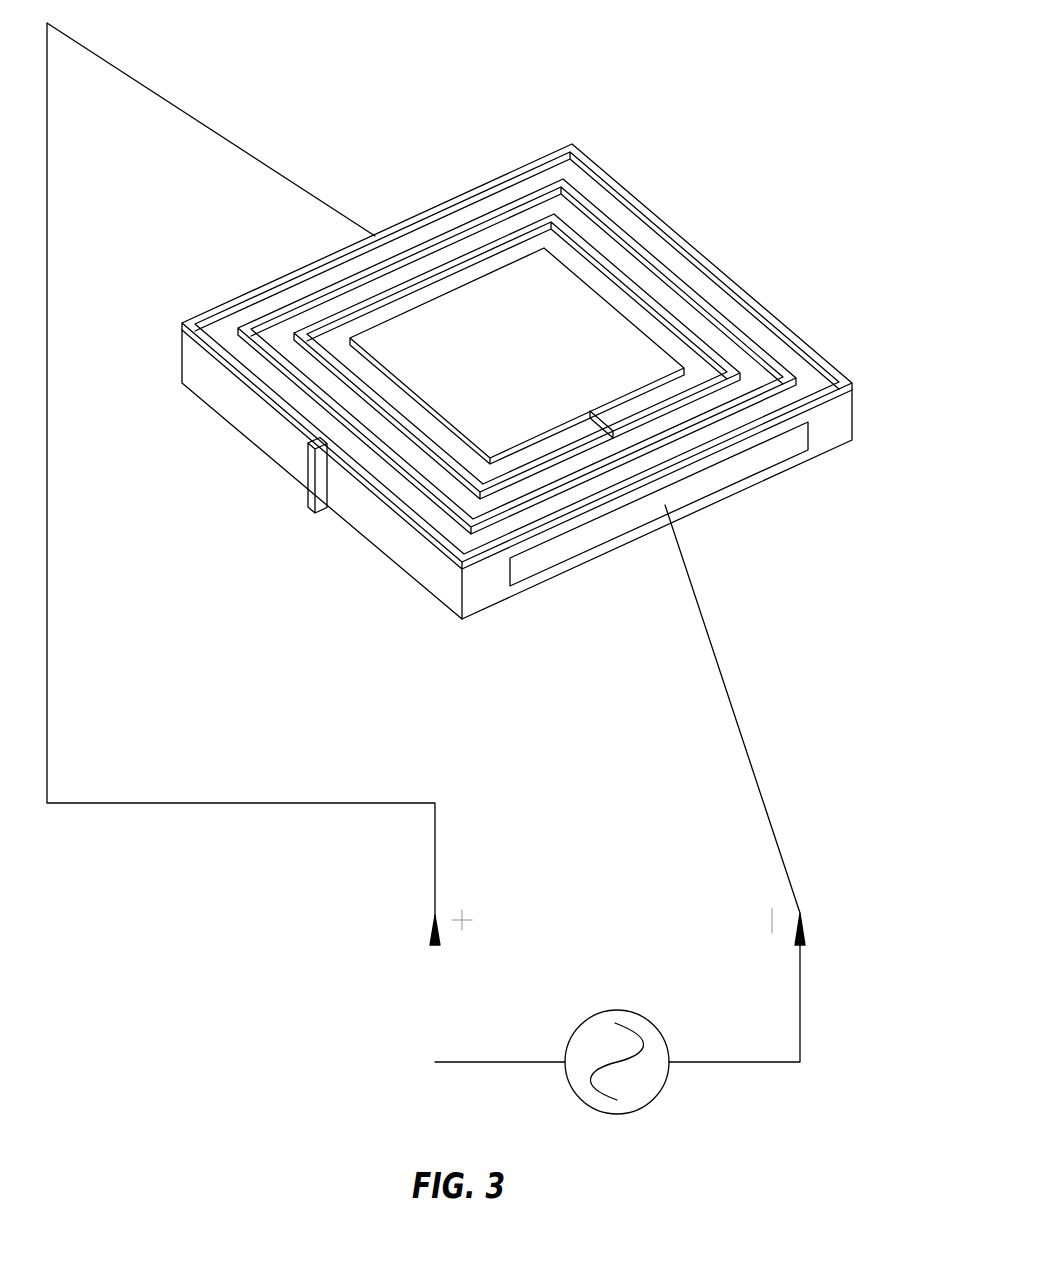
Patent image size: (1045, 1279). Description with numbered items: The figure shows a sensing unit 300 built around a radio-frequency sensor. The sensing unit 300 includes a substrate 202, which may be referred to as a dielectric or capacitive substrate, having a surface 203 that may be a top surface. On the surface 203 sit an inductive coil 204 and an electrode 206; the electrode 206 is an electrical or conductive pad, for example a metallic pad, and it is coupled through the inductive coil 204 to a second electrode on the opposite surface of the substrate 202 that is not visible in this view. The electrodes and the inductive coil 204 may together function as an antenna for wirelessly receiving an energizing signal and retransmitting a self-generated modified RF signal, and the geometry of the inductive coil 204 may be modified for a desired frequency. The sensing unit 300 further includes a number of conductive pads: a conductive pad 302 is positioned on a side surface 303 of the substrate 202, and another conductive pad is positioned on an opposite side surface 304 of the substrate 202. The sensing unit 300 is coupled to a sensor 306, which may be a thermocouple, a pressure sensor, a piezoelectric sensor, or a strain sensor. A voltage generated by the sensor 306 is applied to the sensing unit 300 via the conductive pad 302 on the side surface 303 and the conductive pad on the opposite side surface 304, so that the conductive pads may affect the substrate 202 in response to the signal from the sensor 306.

The sensing unit 300 is at (487, 566).
The substrate 202 is at (554, 481).
The surface 203 is at (267, 308).
The inductive coil 204 is at (511, 344).
The electrode 206 is at (535, 363).
The conductive pad 302 is at (706, 483).
The side surface 303 is at (482, 585).
The opposite side surface 304 is at (517, 356).
The sensor 306 is at (623, 1009).